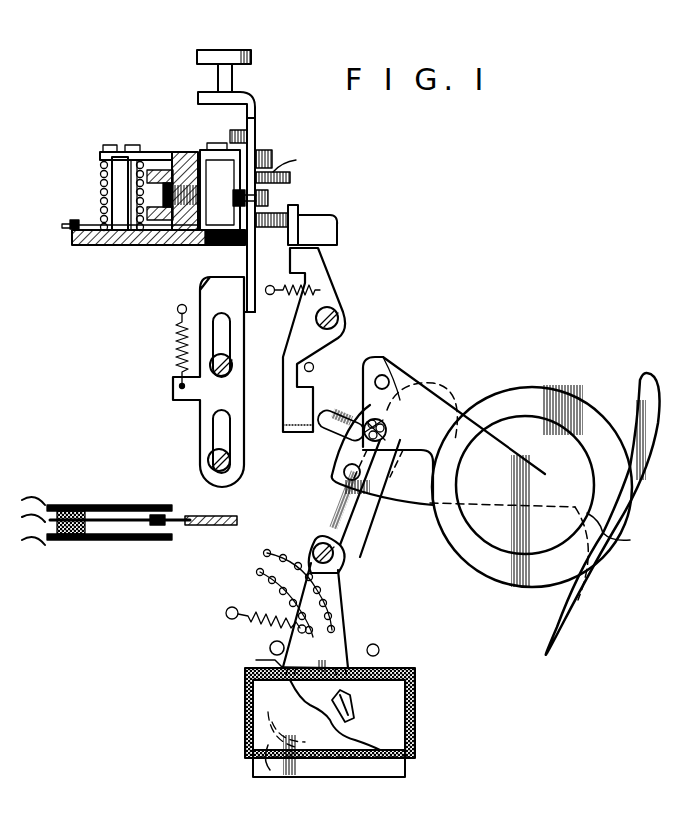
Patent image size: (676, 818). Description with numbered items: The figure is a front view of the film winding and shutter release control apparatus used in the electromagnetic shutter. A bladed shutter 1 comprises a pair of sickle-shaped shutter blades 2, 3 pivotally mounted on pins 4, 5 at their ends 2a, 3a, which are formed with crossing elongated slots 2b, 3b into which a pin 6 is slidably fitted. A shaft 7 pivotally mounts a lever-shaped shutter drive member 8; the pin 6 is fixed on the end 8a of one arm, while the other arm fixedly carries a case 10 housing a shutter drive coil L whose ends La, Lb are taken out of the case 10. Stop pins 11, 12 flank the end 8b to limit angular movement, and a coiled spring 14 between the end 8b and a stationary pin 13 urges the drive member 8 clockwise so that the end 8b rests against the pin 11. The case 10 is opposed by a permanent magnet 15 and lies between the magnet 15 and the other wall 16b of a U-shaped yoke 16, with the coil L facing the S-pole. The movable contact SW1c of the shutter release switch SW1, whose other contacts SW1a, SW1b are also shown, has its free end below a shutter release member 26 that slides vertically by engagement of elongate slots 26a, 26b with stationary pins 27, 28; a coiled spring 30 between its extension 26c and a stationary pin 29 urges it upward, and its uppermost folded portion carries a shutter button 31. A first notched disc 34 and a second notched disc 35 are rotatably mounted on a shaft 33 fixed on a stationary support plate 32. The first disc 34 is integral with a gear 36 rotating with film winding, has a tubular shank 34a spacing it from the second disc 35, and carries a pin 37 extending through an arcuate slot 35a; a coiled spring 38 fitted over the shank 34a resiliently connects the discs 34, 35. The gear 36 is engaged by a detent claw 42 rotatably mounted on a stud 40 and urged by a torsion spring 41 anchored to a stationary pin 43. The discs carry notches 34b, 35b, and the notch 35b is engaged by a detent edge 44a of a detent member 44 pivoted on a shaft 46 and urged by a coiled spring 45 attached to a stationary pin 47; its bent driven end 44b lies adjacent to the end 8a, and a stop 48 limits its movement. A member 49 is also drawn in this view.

The bladed shutter 1 is at (508, 380).
The shutter blade 2 is at (508, 590).
The end of shutter blade 2a is at (365, 368).
The elongated slot 2b is at (405, 385).
The shutter blade 3 is at (576, 404).
The end of shutter blade 3a is at (344, 470).
The elongated slot 3b is at (416, 463).
The pin 4 is at (336, 486).
The pin 5 is at (388, 378).
The pin 6 is at (364, 432).
The shaft 7 is at (322, 543).
The shutter drive member 8 is at (365, 537).
The end of drive member arm 8a is at (350, 418).
The end of drive member arm 8b is at (340, 612).
The case 10 is at (256, 661).
The stop pin 11 is at (270, 646).
The stop pin 12 is at (378, 647).
The stationary pin 13 is at (229, 608).
The coiled spring 14 is at (268, 616).
The permanent magnet 15 is at (415, 715).
The yoke 16 is at (356, 778).
The wall of yoke 16b is at (274, 772).
The shutter release member 26 is at (256, 100).
The elongate slot 26a is at (228, 342).
The elongate slot 26b is at (218, 437).
The extension 26c is at (180, 385).
The stationary pin 27 is at (233, 368).
The stationary pin 28 is at (208, 460).
The stationary pin 29 is at (177, 308).
The coiled spring 30 is at (177, 354).
The shutter button 31 is at (226, 50).
The stationary support plate 32 is at (100, 245).
The shaft 33 is at (215, 143).
The first notched disc 34 is at (291, 178).
The tubular shank 34a is at (270, 200).
The notch 34b is at (303, 156).
The second notched disc 35 is at (288, 222).
The arcuate slot 35a is at (150, 245).
The notch 35b is at (300, 217).
The gear 36 is at (264, 152).
The pin 37 is at (163, 198).
The coiled spring 38 is at (300, 276).
The stud 40 is at (112, 160).
The torsion spring 41 is at (100, 185).
The detent claw 42 is at (160, 152).
The stationary pin 43 is at (70, 224).
The detent member 44 is at (327, 268).
The detent edge 44a is at (337, 235).
The driven end 44b is at (283, 425).
The coiled spring 45 is at (297, 295).
The shaft 46 is at (339, 318).
The stationary pin 47 is at (270, 295).
The stop 48 is at (314, 366).
The blade 49 is at (631, 542).
The shutter release switch SW1 is at (95, 550).
The switch contact SW1a is at (131, 540).
The switch contact SW1b is at (114, 504).
The movable contact SW1c is at (191, 517).
The shutter drive coil L is at (350, 704).
The coil end La is at (264, 570).
The coil end Lb is at (300, 556).